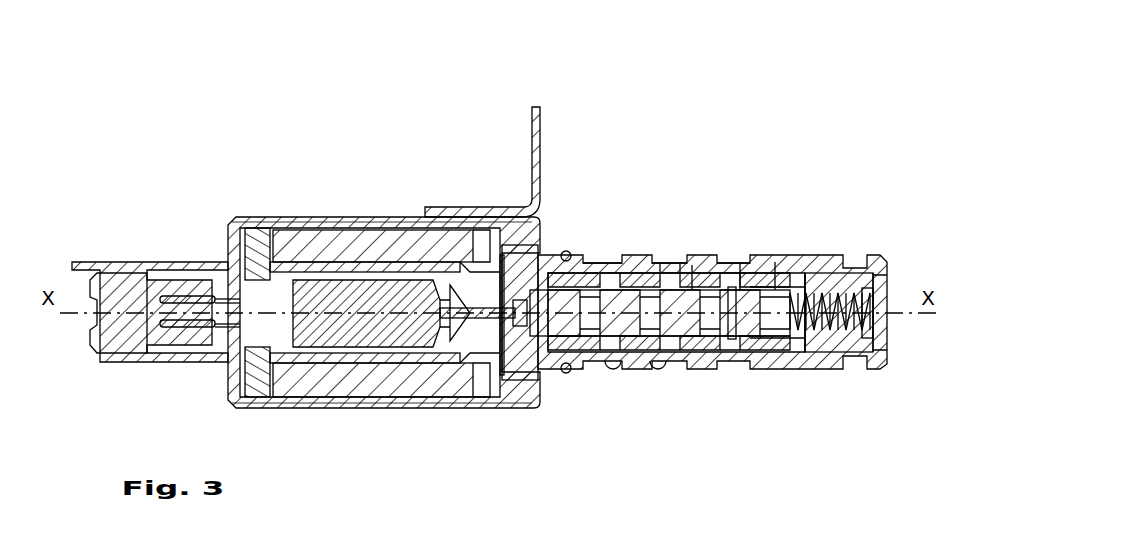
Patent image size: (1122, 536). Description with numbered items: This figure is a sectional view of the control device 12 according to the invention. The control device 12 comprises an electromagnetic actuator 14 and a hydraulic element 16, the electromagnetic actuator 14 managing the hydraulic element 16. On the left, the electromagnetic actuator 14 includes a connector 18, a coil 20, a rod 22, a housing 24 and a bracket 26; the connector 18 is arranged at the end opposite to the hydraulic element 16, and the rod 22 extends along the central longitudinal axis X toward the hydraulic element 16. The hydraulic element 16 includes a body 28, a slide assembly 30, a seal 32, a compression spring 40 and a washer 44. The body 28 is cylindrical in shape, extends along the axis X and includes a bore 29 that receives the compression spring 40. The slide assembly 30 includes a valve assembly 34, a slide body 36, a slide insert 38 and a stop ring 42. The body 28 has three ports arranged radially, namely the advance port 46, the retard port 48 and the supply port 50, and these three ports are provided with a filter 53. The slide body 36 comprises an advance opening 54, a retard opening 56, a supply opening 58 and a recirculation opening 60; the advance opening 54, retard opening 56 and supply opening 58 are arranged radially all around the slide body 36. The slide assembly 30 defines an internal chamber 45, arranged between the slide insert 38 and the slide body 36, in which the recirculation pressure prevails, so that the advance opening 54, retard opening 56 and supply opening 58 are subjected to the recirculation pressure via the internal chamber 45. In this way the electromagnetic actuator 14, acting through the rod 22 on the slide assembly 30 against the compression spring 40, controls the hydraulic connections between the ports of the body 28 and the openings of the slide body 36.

The control device 12 is at (397, 244).
The electromagnetic actuator 14 is at (156, 224).
The hydraulic element 16 is at (725, 259).
The connector 18 is at (173, 262).
The coil 20 is at (353, 377).
The rod 22 is at (350, 290).
The housing 24 is at (385, 225).
The bracket 26 is at (540, 128).
The body 28 is at (849, 305).
The bore 29 is at (860, 283).
The slide assembly 30 is at (725, 307).
The seal 32 is at (566, 250).
The valve assembly 34 is at (676, 369).
The slide body 36 is at (728, 369).
The slide insert 38 is at (660, 364).
The compression spring 40 is at (869, 347).
The stop ring 42 is at (788, 362).
The washer 44 is at (880, 342).
The internal chamber 45 is at (722, 262).
The advance port 46 is at (610, 248).
The retard port 48 is at (745, 252).
The supply port 50 is at (660, 252).
The filter 53 is at (680, 250).
The advance opening 54 is at (613, 369).
The retard opening 56 is at (778, 265).
The supply opening 58 is at (657, 369).
The recirculation opening 60 is at (697, 265).